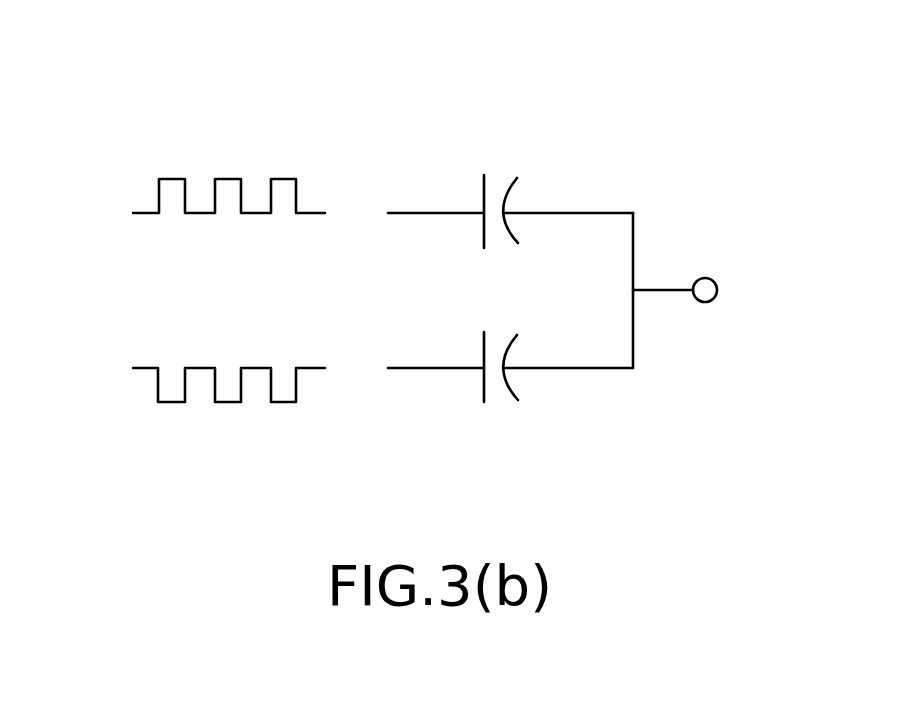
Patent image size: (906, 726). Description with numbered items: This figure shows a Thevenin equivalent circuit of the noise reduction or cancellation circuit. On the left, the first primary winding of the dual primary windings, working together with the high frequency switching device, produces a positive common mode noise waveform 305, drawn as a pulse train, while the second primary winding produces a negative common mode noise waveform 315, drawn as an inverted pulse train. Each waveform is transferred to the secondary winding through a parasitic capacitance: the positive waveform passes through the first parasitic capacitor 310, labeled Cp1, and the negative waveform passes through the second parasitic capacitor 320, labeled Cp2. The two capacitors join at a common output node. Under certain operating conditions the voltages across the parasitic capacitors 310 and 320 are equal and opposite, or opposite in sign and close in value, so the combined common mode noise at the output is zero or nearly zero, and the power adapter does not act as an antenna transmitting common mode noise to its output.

The positive common mode noise waveform 305 is at (227, 178).
The negative common mode noise waveform 315 is at (227, 403).
The first parasitic capacitor 310 is at (547, 166).
The second parasitic capacitor 320 is at (551, 412).